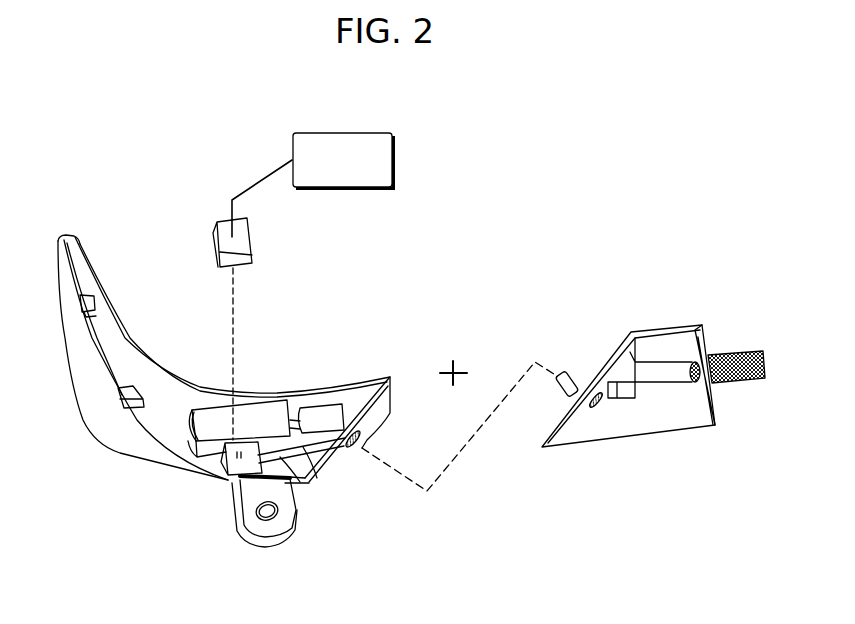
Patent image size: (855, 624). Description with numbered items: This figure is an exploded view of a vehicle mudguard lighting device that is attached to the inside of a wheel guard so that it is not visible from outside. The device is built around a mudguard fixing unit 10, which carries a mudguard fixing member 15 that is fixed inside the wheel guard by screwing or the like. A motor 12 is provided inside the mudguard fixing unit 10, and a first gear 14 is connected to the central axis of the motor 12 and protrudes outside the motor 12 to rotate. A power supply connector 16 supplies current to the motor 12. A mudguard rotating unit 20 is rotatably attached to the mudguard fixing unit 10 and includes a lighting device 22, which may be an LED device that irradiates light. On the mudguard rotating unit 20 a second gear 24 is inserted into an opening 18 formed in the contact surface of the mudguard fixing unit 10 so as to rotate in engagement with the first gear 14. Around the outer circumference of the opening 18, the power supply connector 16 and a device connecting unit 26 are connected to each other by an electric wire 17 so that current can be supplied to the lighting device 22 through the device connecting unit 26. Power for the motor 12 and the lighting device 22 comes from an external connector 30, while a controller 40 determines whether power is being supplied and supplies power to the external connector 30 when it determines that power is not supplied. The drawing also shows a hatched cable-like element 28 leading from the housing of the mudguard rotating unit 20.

The mudguard fixing unit 10 is at (123, 443).
The motor 12 is at (258, 410).
The first gear 14 is at (325, 412).
The mudguard fixing member 15 is at (265, 543).
The power supply connector 16 is at (230, 481).
The electric wire 17 is at (306, 480).
The opening 18 is at (348, 445).
The mudguard rotating unit 20 is at (600, 430).
The lighting device 22 is at (661, 363).
The second gear 24 is at (570, 372).
The device connecting unit 26 is at (628, 397).
The cable 28 is at (713, 395).
The external connector 30 is at (216, 228).
The controller 40 is at (394, 160).